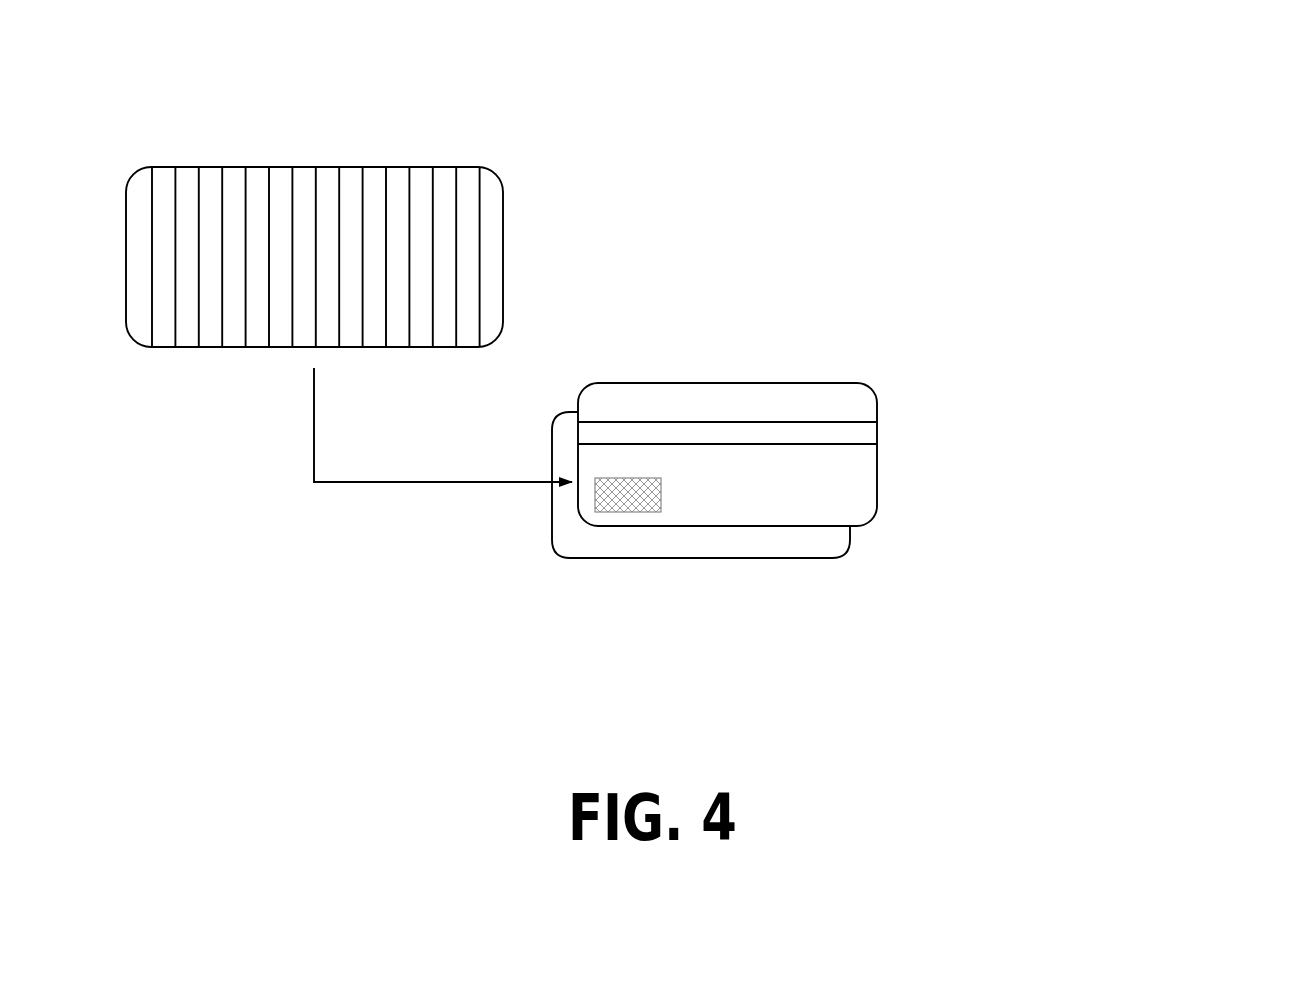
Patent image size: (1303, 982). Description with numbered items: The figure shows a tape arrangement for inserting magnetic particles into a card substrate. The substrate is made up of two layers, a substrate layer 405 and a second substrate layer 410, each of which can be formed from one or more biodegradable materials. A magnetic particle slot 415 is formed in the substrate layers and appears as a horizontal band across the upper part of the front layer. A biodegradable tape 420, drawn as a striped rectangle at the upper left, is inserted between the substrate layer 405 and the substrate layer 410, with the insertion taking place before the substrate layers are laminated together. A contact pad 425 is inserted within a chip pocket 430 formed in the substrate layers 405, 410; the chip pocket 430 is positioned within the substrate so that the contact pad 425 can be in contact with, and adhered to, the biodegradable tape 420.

The substrate layer 405 is at (840, 397).
The substrate layer 410 is at (933, 575).
The magnetic particle slot 415 is at (885, 436).
The biodegradable tape 420 is at (489, 187).
The contact pad 425 is at (597, 493).
The chip pocket 430 is at (626, 518).